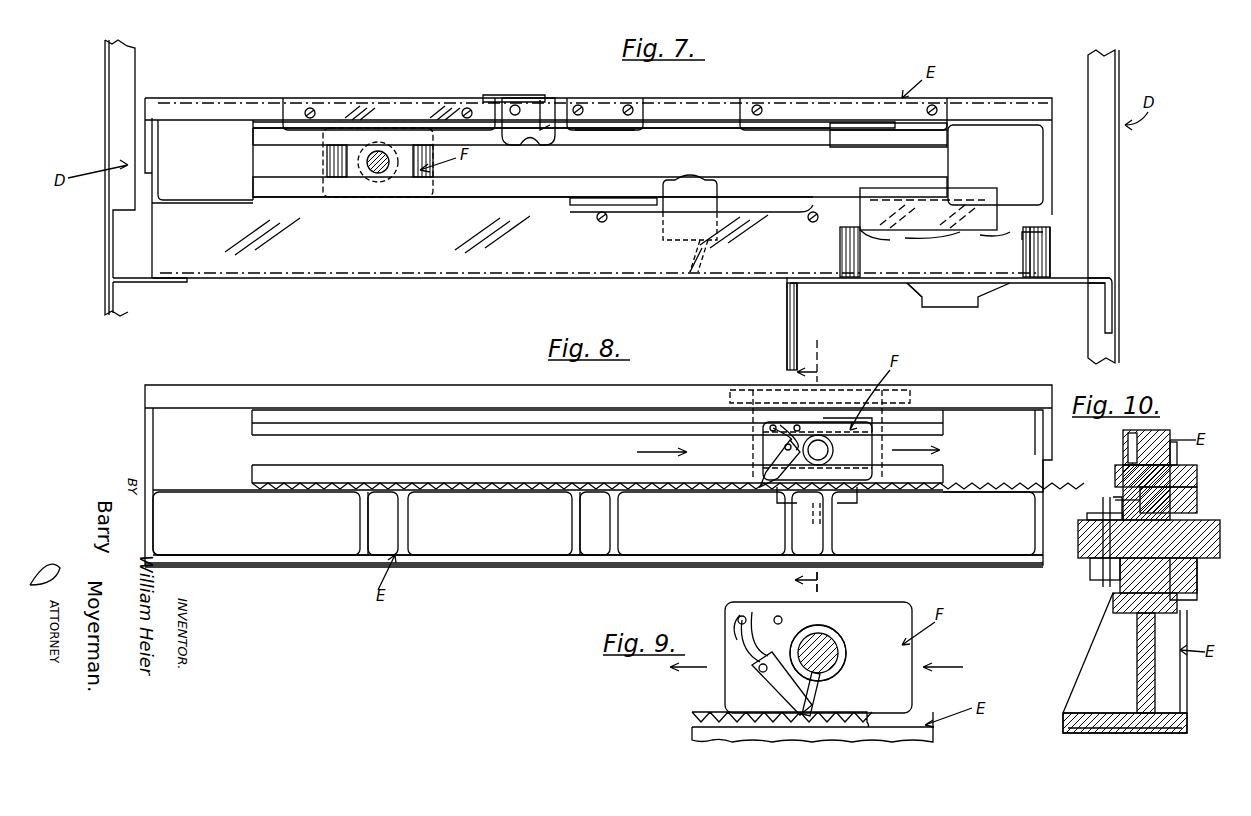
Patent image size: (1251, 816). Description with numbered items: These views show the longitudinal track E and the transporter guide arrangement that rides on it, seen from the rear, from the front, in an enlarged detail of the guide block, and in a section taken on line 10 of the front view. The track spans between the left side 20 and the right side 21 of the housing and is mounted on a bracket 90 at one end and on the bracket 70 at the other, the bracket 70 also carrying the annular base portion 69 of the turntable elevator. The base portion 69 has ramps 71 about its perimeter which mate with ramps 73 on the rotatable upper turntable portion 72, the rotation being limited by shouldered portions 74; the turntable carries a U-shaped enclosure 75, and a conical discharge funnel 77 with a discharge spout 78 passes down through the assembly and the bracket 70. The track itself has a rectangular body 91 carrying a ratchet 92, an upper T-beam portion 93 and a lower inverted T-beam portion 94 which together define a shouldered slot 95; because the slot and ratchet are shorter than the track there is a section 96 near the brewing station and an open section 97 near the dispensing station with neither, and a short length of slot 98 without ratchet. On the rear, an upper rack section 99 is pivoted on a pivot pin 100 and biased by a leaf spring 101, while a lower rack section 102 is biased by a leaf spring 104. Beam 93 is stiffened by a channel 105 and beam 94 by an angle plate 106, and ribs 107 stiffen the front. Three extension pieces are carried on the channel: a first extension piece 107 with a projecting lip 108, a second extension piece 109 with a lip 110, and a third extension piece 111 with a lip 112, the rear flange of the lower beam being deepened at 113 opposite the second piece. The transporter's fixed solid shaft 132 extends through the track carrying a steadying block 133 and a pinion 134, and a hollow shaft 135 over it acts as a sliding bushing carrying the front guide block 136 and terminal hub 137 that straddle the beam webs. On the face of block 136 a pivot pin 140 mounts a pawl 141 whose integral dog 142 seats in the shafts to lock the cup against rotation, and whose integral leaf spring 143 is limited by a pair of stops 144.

In FIG. 7, the section line 10 is at (821, 361).
In FIG. 8, the section line 10 is at (825, 582).
In FIG. 9, the section line 10 is at (836, 582).
In FIG. 7, the left side 20 is at (1118, 150).
In FIG. 7, the right side 21 is at (105, 128).
In FIG. 7, the annular base portion 69 is at (1050, 252).
In FIG. 7, the bracket 70 is at (990, 285).
In FIG. 7, the ramps 71 is at (890, 242).
In FIG. 7, the upper turntable portion 72 is at (1045, 240).
In FIG. 7, the ramps 73 is at (985, 215).
In FIG. 7, the shouldered portions 74 is at (1030, 232).
In FIG. 7, the U-shaped enclosure 75 is at (965, 188).
In FIG. 7, the conical discharge funnel 77 is at (905, 288).
In FIG. 7, the brewed beverage discharge spout 78 is at (948, 305).
In FIG. 7, the bracket 90 is at (150, 284).
In FIG. 8, the track body 91 is at (302, 558).
In FIG. 10, the track body 91 is at (1137, 660).
In FIG. 8, the ratchet 92 is at (406, 482).
In FIG. 9, the ratchet 92 is at (700, 718).
In FIG. 10, the ratchet 92 is at (1113, 600).
In FIG. 7, the upper T-beam portion 93 is at (253, 136).
In FIG. 8, the upper T-beam portion 93 is at (252, 430).
In FIG. 10, the upper T-beam portion 93 is at (1197, 505).
In FIG. 7, the lower inverted T-beam portion 94 is at (253, 185).
In FIG. 8, the lower inverted T-beam portion 94 is at (252, 476).
In FIG. 10, the lower inverted T-beam portion 94 is at (1180, 592).
In FIG. 7, the shouldered slot 95 is at (775, 173).
In FIG. 8, the shouldered slot 95 is at (499, 462).
In FIG. 7, the section 96 is at (992, 135).
In FIG. 8, the section 96 is at (158, 442).
In FIG. 7, the open section 97 is at (170, 140).
In FIG. 8, the open section 97 is at (1005, 420).
In FIG. 8, the short length of slot 98 is at (885, 487).
In FIG. 7, the upper rack section 99 is at (550, 115).
In FIG. 7, the pivot pin 100 is at (518, 106).
In FIG. 7, the leaf spring 101 is at (490, 95).
In FIG. 7, the lower rack section 102 is at (700, 184).
In FIG. 7, the leaf spring 104 is at (745, 215).
In FIG. 7, the channel 105 is at (226, 108).
In FIG. 8, the channel 105 is at (400, 388).
In FIG. 10, the channel 105 is at (1170, 462).
In FIG. 7, the angle plate 106 is at (382, 262).
In FIG. 8, the angle plate 106 is at (490, 571).
In FIG. 10, the angle plate 106 is at (1187, 693).
In FIG. 7, the first extension piece 107 is at (330, 110).
In FIG. 8, the first extension piece 107 is at (582, 515).
In FIG. 10, the first extension piece 107 is at (1197, 475).
In FIG. 7, the projecting lip 108 is at (290, 126).
In FIG. 10, the projecting lip 108 is at (1197, 490).
In FIG. 7, the second extension piece 109 is at (604, 106).
In FIG. 7, the lip 110 is at (604, 131).
In FIG. 7, the third extension piece 111 is at (815, 110).
In FIG. 7, the lip 112 is at (860, 131).
In FIG. 7, the deepened rear flange 113 is at (590, 200).
In FIG. 7, the fixed solid shaft 132 is at (388, 175).
In FIG. 9, the fixed solid shaft 132 is at (832, 650).
In FIG. 10, the fixed solid shaft 132 is at (1090, 548).
In FIG. 7, the steadying block 133 is at (340, 190).
In FIG. 7, the pinion 134 is at (375, 185).
In FIG. 9, the hollow shaft 135 is at (845, 667).
In FIG. 10, the hollow shaft 135 is at (1095, 512).
In FIG. 7, the front guide block 136 is at (328, 184).
In FIG. 8, the front guide block 136 is at (845, 438).
In FIG. 9, the front guide block 136 is at (912, 690).
In FIG. 10, the front guide block 136 is at (1125, 480).
In FIG. 7, the terminal hub 137 is at (322, 155).
In FIG. 10, the terminal hub 137 is at (1197, 518).
In FIG. 9, the pivot pin 140 is at (758, 670).
In FIG. 8, the pawl 141 is at (765, 468).
In FIG. 9, the pawl 141 is at (778, 692).
In FIG. 9, the dog 142 is at (818, 698).
In FIG. 9, the leaf spring 143 is at (740, 632).
In FIG. 9, the stops 144 is at (778, 616).